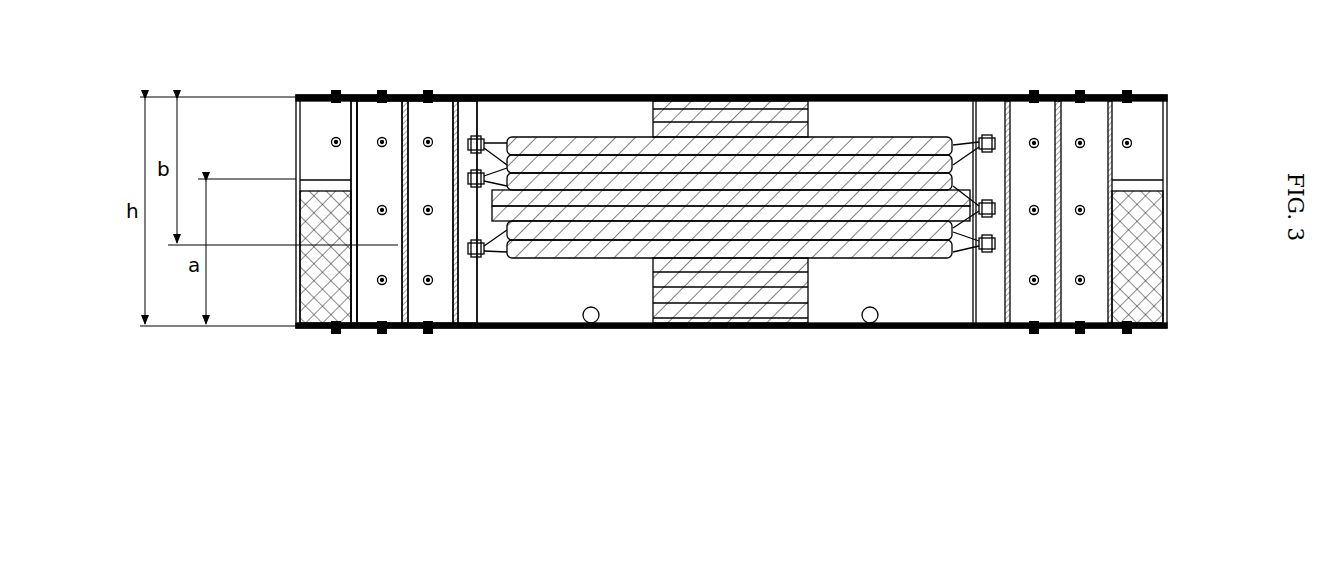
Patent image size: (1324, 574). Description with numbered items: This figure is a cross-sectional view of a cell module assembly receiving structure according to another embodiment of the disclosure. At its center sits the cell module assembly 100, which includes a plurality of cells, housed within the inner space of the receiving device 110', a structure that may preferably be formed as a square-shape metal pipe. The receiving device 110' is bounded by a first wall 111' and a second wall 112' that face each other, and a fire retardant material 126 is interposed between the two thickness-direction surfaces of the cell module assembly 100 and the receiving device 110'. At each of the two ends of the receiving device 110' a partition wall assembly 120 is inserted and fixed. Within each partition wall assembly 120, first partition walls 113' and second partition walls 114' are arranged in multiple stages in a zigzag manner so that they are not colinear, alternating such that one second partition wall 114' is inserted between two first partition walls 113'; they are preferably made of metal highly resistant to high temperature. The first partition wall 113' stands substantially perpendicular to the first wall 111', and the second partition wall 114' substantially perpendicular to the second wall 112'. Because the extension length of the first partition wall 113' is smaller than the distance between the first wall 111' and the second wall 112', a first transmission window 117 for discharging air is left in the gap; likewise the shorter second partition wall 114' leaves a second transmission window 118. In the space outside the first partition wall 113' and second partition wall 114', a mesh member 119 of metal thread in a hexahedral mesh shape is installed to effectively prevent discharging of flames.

The cell module assembly 100 is at (846, 113).
The receiving device 110' is at (731, 177).
The first wall 111' is at (731, 355).
The second wall 112' is at (731, 71).
The first partition wall 113' is at (411, 243).
The second partition wall 114' is at (418, 182).
The first transmission window 117 is at (362, 126).
The second transmission window 118 is at (415, 328).
The mesh member 119 is at (315, 280).
The partition wall assembly 120 is at (288, 170).
The fire retardant material 126 is at (653, 100).